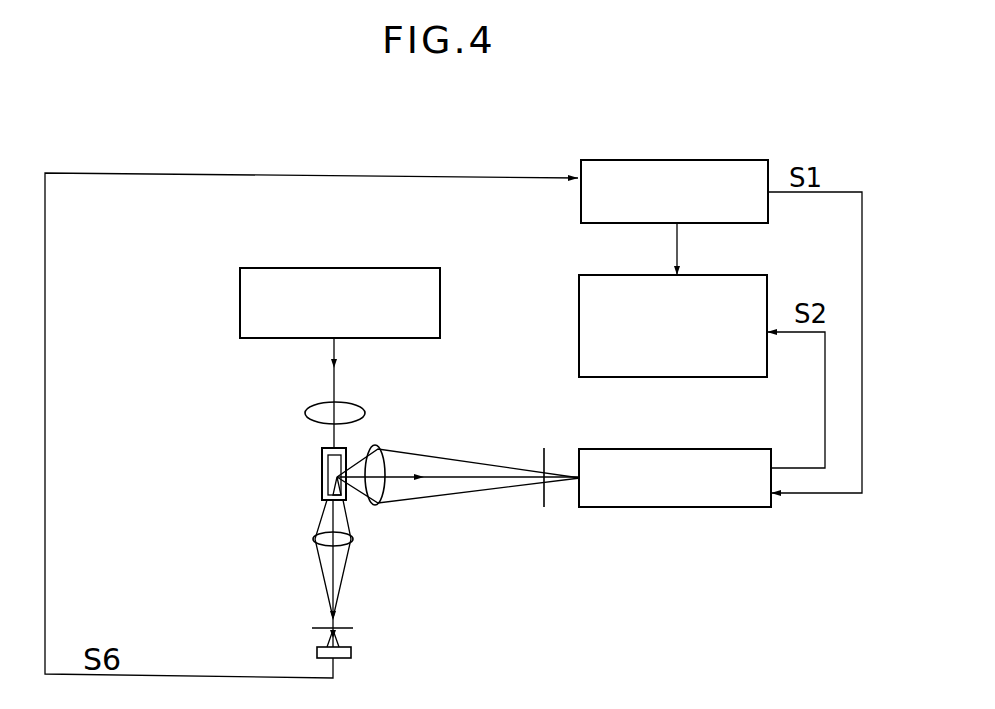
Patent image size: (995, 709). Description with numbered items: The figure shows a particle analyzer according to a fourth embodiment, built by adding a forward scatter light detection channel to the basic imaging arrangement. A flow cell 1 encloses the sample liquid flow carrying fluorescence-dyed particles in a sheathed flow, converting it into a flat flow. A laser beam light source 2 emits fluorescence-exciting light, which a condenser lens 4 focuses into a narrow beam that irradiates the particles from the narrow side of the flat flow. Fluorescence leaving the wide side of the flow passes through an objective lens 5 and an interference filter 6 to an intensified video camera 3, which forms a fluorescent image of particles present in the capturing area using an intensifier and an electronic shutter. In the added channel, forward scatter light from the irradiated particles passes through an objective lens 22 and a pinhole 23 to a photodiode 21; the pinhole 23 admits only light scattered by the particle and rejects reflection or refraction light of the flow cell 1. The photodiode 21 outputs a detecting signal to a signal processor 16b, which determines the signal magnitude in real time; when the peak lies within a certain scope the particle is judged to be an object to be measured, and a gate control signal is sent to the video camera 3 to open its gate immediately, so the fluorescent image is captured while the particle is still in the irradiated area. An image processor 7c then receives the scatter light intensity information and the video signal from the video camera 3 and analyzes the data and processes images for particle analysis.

The flow cell 1 is at (322, 464).
The laser beam light source 2 is at (415, 268).
The video camera 3 is at (740, 507).
The condenser lens 4 is at (347, 410).
The objective lens 5 is at (378, 450).
The interference filter 6 is at (544, 452).
The image processor 7c is at (732, 275).
The signal processor 16b is at (725, 160).
The photodiode 21 is at (351, 654).
The objective lens 22 is at (320, 545).
The pinhole 23 is at (318, 627).